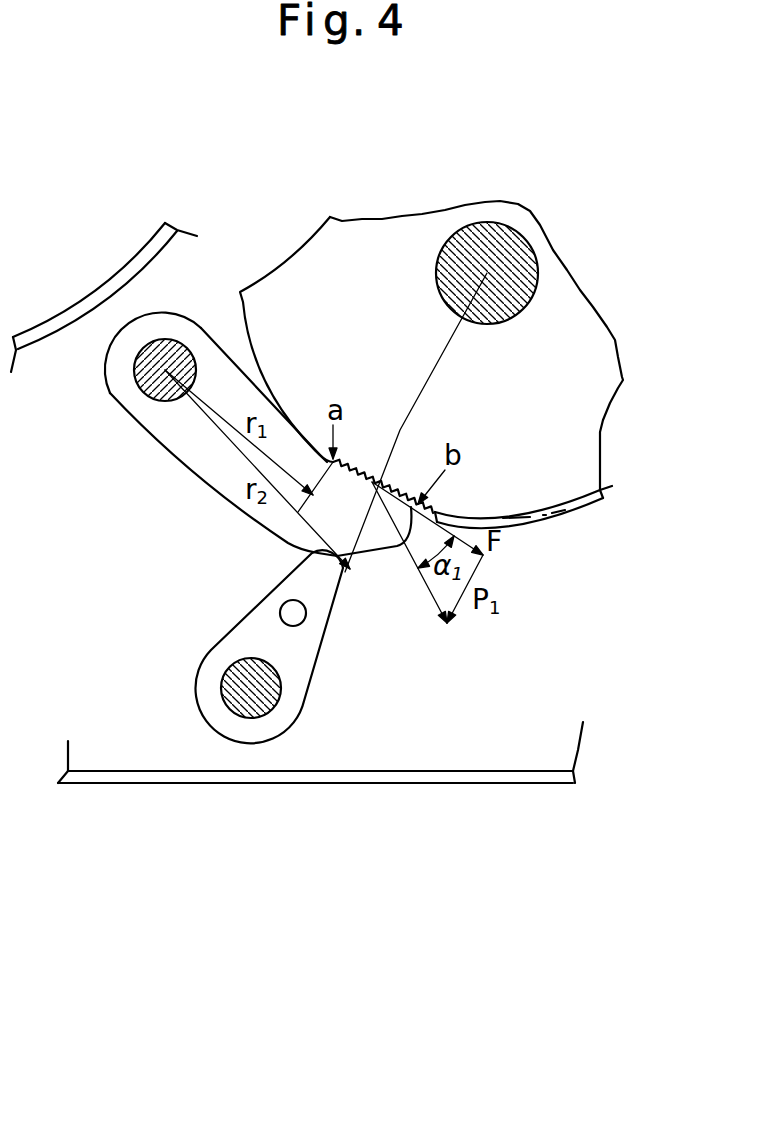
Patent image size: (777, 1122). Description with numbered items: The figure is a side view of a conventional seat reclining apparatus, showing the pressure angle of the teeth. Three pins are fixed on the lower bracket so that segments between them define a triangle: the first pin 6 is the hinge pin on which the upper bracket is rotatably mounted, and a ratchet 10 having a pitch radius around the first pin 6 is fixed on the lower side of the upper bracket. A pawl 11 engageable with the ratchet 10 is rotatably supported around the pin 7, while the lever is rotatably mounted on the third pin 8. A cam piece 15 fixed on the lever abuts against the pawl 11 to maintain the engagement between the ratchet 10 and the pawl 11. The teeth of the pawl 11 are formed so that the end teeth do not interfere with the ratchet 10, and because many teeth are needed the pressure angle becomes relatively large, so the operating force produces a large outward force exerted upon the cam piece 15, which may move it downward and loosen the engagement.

The first pin 6 is at (520, 275).
The pin 7 is at (176, 350).
The third pin 8 is at (233, 698).
The ratchet 10 is at (587, 457).
The pawl 11 is at (221, 467).
The cam piece 15 is at (297, 680).